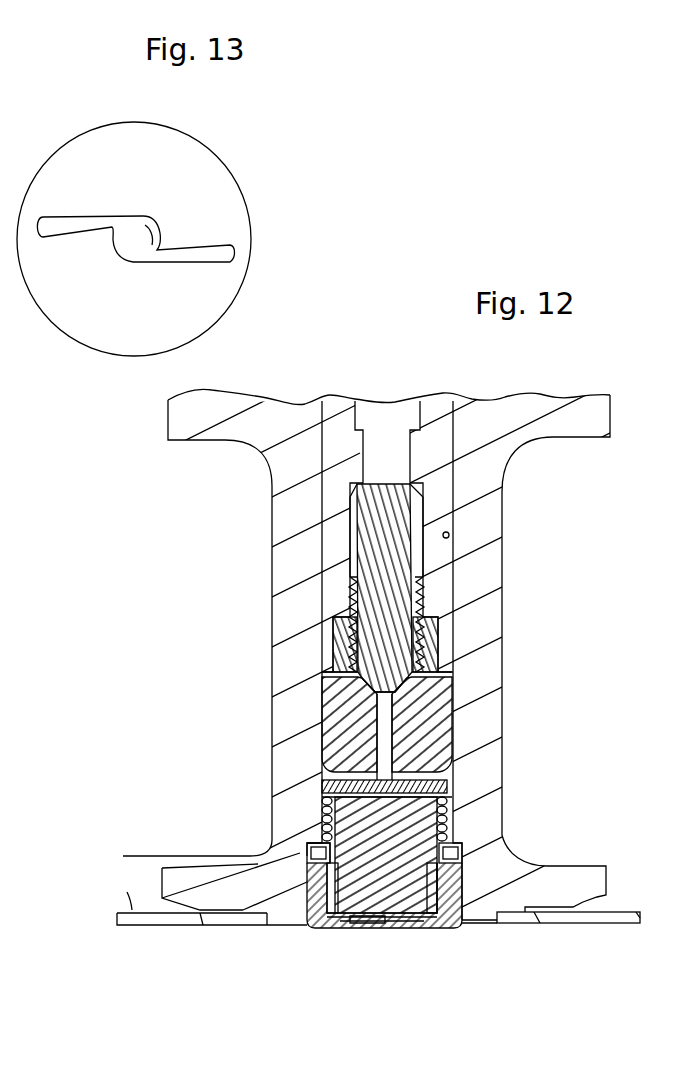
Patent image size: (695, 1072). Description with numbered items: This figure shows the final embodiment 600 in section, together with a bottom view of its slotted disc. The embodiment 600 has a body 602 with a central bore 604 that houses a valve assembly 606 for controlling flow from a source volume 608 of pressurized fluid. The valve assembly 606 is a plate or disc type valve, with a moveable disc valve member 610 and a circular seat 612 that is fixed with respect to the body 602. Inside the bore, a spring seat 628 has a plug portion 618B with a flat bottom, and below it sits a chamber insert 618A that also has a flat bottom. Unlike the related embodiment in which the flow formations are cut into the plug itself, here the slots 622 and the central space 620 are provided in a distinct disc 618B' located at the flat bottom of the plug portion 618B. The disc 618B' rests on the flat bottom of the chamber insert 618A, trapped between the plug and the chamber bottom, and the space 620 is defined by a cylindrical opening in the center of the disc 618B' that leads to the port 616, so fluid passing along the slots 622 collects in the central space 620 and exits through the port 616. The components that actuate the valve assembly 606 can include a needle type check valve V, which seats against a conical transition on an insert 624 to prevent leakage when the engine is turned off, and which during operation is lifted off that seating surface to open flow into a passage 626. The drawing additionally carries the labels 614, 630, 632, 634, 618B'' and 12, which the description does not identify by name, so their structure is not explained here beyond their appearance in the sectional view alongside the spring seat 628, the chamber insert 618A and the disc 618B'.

In FIG. 12, the final embodiment 600 is at (560, 351).
In FIG. 12, the body 602 is at (487, 573).
In FIG. 12, the central bore 604 is at (447, 534).
In FIG. 12, the valve assembly 606 is at (449, 700).
In FIG. 12, the source volume 608 is at (450, 660).
In FIG. 12, the moveable disc valve member 610 is at (448, 797).
In FIG. 12, the circular seat 612 is at (447, 775).
In FIG. 12, the cup 614 is at (470, 850).
In FIG. 12, the port 616 is at (403, 928).
In FIG. 12, the chamber insert 618A is at (463, 922).
In FIG. 12, the plug portion 618B is at (340, 959).
In FIG. 12, the disc plate 618B'' is at (291, 979).
In FIG. 13, the disc 618B' is at (191, 228).
In FIG. 13, the central space 620 is at (147, 233).
In FIG. 12, the central space 620 is at (367, 916).
In FIG. 13, the slots 622 is at (215, 258).
In FIG. 12, the insert 624 is at (360, 681).
In FIG. 12, the passage 626 is at (388, 712).
In FIG. 12, the spring seat 628 is at (340, 807).
In FIG. 12, the spring 630 is at (330, 837).
In FIG. 12, the cup flange 632 is at (312, 855).
In FIG. 12, the spring retainer 634 is at (345, 803).
In FIG. 12, the mounting plate 12 is at (110, 872).
In FIG. 12, the needle type check valve V is at (357, 572).